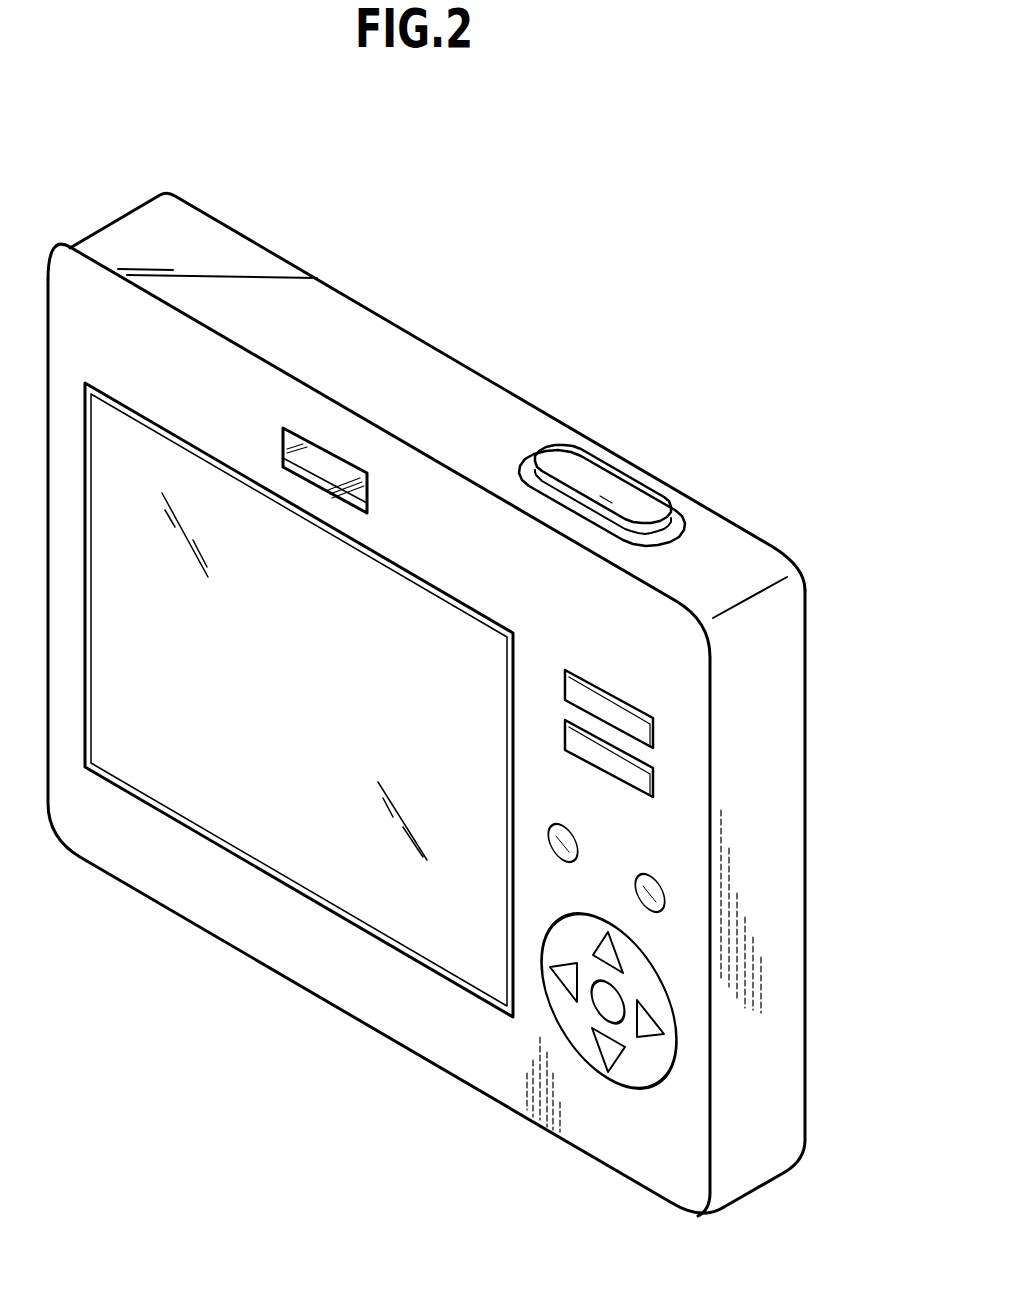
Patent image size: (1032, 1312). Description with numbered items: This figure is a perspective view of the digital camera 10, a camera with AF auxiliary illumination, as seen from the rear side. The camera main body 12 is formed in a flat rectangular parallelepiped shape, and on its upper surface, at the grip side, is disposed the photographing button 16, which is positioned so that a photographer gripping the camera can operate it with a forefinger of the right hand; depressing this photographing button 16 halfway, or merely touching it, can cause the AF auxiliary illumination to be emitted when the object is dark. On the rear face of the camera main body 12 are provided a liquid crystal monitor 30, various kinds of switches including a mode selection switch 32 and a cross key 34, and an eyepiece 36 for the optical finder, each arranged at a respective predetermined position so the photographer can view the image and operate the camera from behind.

The digital camera 10 is at (462, 264).
The camera main body 12 is at (355, 360).
The photographing button 16 is at (628, 488).
The liquid crystal monitor 30 is at (290, 840).
The mode selection switch 32 is at (638, 782).
The cross key 34 is at (640, 982).
The eyepiece 36 is at (332, 465).